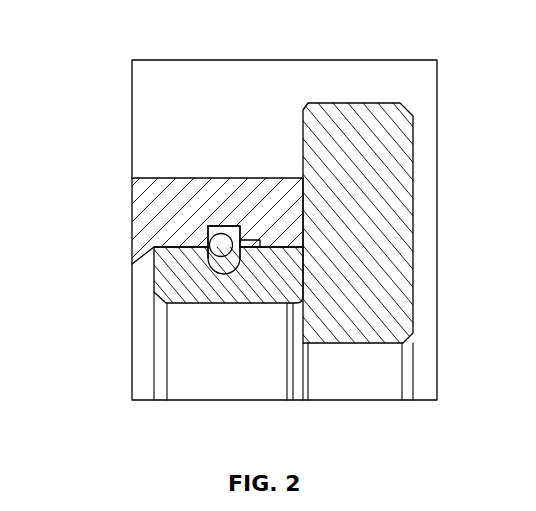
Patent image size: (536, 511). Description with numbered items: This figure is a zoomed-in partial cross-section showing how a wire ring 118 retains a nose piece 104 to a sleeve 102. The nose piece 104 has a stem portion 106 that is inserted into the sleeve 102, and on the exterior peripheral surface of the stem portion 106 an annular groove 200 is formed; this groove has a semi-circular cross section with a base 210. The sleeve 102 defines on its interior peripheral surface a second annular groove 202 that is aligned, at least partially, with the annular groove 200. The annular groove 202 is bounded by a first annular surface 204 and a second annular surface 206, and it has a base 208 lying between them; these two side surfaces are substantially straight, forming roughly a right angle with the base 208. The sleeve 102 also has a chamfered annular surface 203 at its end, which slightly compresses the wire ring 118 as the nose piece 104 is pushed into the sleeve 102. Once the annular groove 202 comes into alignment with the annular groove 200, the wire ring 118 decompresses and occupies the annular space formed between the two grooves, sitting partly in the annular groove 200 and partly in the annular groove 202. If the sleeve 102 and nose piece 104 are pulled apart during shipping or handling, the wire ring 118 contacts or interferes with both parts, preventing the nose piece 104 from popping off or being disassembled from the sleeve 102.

The sleeve 102 is at (152, 168).
The nose piece 104 is at (422, 167).
The stem portion 106 is at (172, 274).
The wire ring 118 is at (220, 216).
The annular groove 200 is at (243, 272).
The annular groove 202 is at (247, 249).
The chamfered annular surface 203 is at (262, 241).
The first annular surface 204 is at (248, 222).
The second annular surface 206 is at (200, 232).
The base 208 is at (233, 211).
The base 210 is at (218, 288).